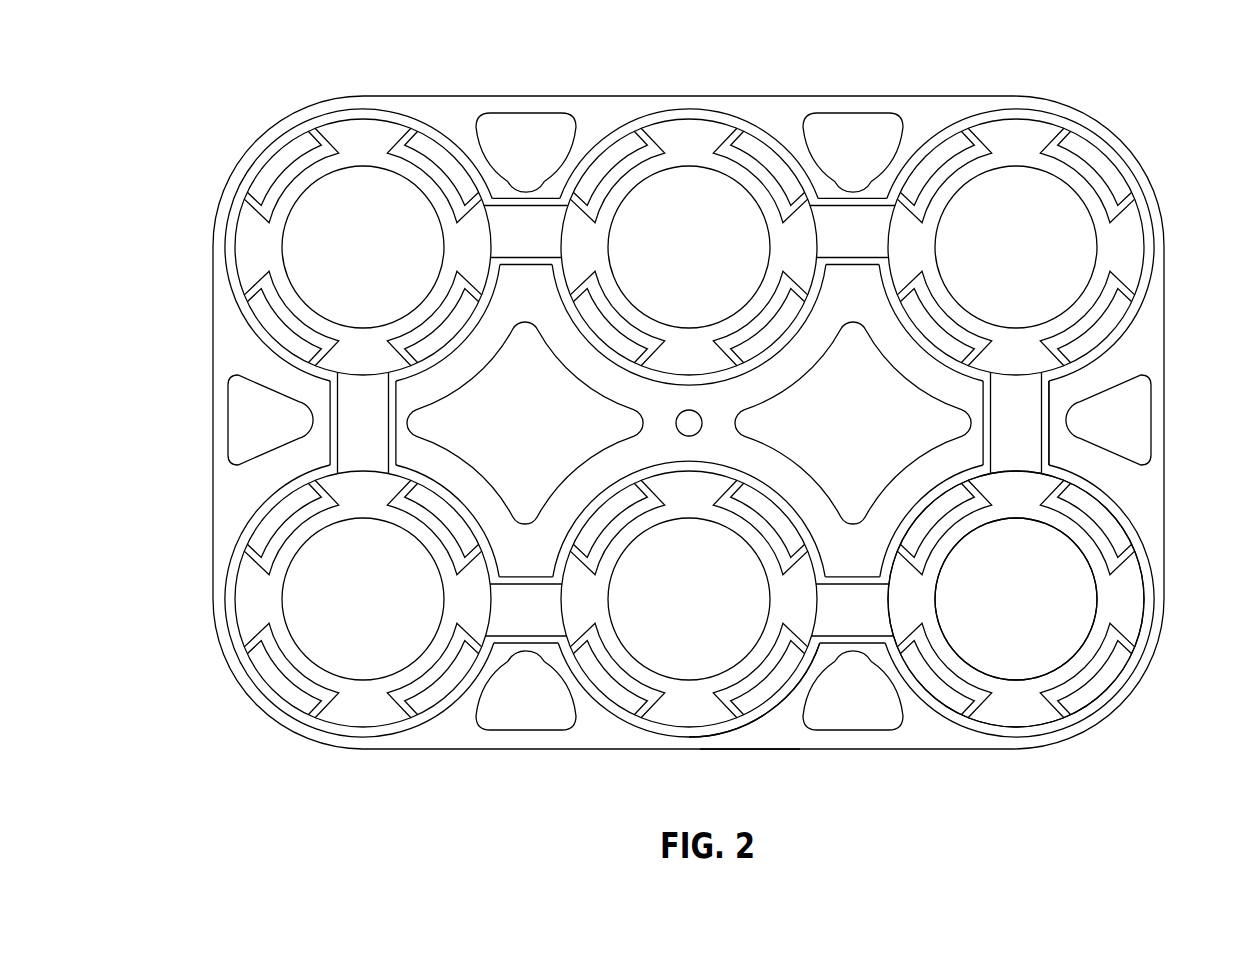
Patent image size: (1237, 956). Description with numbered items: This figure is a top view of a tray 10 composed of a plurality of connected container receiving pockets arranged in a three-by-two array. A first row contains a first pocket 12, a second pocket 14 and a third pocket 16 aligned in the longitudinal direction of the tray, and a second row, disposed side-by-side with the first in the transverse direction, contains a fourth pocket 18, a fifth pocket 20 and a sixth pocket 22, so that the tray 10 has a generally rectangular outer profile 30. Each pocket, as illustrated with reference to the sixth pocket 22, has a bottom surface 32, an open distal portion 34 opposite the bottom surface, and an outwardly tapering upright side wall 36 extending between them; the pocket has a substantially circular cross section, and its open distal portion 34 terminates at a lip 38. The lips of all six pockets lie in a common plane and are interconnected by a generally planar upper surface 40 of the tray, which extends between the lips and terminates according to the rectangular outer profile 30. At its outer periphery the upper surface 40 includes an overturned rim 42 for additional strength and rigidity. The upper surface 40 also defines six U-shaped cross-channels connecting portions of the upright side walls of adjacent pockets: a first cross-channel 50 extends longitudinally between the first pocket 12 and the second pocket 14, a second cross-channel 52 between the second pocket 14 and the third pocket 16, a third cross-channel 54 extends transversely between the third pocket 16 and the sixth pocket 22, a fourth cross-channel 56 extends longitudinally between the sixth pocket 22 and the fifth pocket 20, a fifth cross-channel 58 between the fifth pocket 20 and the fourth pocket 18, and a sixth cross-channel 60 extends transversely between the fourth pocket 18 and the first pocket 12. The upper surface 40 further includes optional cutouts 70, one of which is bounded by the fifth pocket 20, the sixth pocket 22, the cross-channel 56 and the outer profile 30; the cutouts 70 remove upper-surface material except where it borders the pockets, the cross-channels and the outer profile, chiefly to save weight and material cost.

The tray 10 is at (227, 122).
The first pocket 12 is at (365, 138).
The second pocket 14 is at (692, 138).
The third pocket 16 is at (1017, 138).
The fourth pocket 18 is at (365, 661).
The fifth pocket 20 is at (691, 661).
The sixth pocket 22 is at (1013, 662).
The outer profile 30 is at (455, 749).
The bottom surface 32 is at (1076, 604).
The open distal portion 34 is at (1141, 537).
The upright side wall 36 is at (1035, 488).
The lip 38 is at (1151, 569).
The upper surface 40 is at (779, 724).
The overturned rim 42 is at (753, 749).
The first U-shaped cross-channel 50 is at (541, 246).
The second U-shaped cross-channel 52 is at (866, 246).
The third U-shaped cross-channel 54 is at (1028, 436).
The fourth U-shaped cross-channel 56 is at (867, 622).
The fifth U-shaped cross-channel 58 is at (541, 622).
The sixth U-shaped cross-channel 60 is at (377, 436).
The cutouts 70 is at (850, 714).